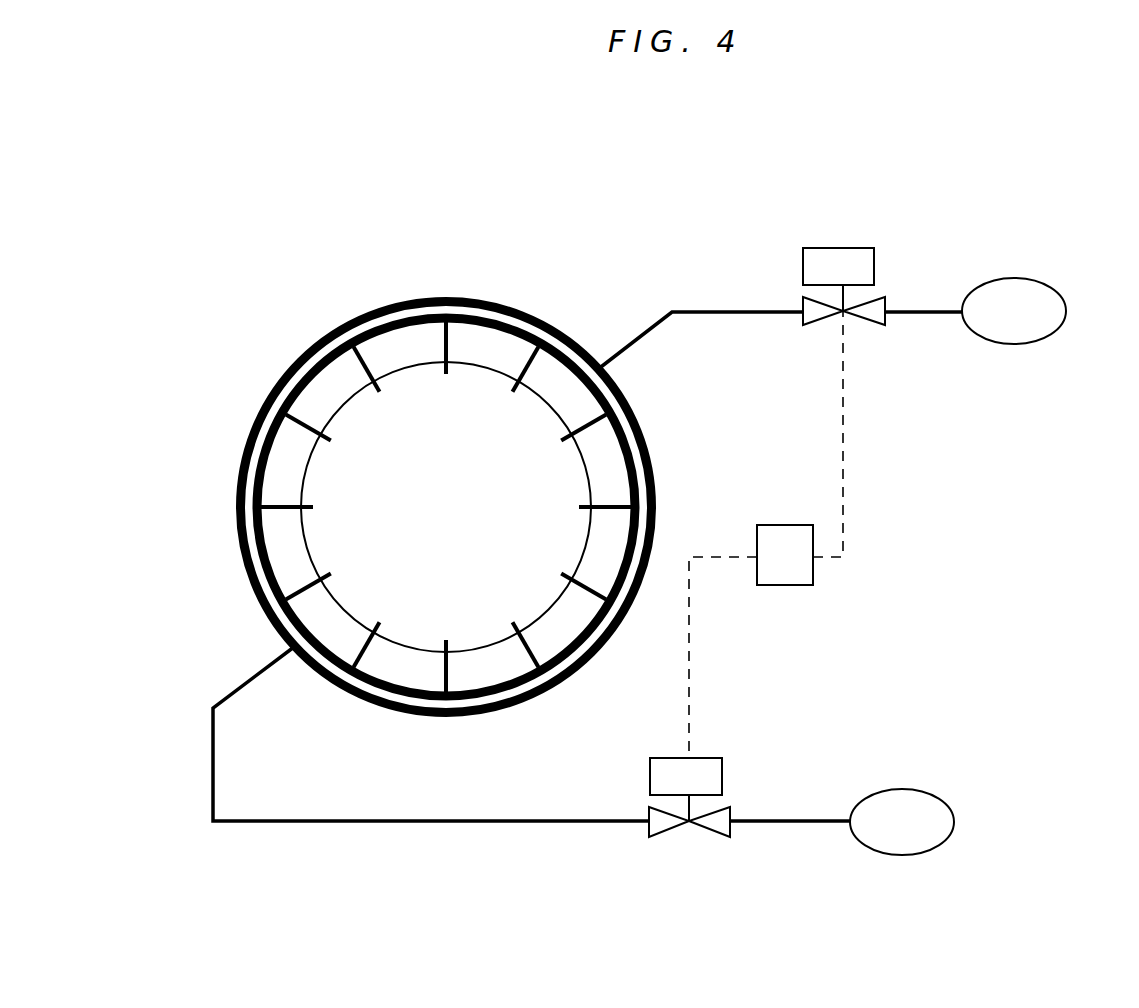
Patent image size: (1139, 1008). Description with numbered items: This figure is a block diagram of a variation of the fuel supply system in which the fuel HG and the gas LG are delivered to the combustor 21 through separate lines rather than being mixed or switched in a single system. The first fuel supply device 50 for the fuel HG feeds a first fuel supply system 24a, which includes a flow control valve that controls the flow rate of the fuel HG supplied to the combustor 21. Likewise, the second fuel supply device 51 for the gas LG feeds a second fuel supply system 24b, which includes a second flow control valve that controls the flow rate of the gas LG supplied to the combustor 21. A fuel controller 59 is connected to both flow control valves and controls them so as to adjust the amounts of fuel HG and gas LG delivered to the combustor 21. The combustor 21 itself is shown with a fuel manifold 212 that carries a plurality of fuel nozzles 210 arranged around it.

The combustor 21 is at (499, 425).
The fuel nozzles 210 is at (578, 424).
The fuel manifold 212 is at (290, 362).
The first fuel supply system 24a is at (912, 270).
The second fuel supply system 24b is at (803, 783).
The first fuel supply device 50 is at (1031, 279).
The second fuel supply device 51 is at (940, 797).
The fuel controller 59 is at (785, 585).